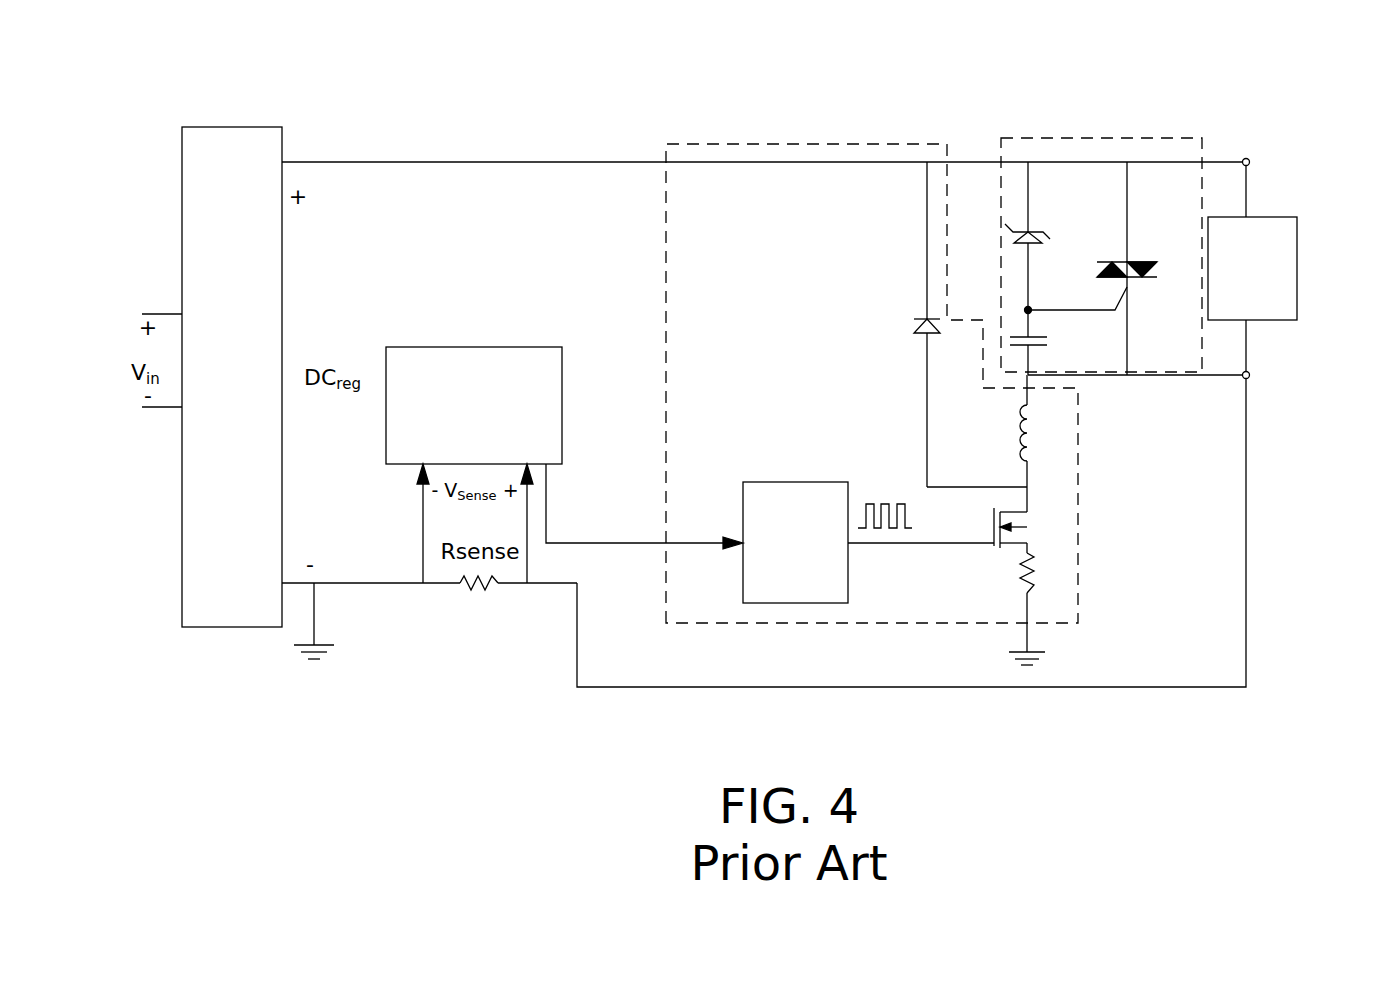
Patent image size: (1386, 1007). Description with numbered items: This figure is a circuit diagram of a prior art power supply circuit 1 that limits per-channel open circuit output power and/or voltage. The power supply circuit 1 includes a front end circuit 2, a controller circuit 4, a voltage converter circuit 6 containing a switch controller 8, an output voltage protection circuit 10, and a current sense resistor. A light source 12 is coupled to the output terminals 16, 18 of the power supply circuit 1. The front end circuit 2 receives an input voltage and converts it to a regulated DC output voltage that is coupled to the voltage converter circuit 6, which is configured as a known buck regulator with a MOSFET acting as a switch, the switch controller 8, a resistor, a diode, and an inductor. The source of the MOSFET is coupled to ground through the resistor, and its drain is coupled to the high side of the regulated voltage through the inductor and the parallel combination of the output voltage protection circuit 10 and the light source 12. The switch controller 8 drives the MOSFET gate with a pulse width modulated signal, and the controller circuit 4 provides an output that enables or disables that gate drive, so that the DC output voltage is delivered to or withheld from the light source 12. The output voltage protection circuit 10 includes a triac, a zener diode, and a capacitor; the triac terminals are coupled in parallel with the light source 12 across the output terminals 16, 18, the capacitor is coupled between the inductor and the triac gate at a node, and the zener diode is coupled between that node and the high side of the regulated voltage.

The power supply circuit 1 is at (461, 68).
The front end circuit 2 is at (232, 377).
The controller circuit 4 is at (474, 405).
The voltage converter circuit 6 is at (777, 144).
The switch controller 8 is at (795, 542).
The output voltage protection circuit 10 is at (1080, 138).
The light source 12 is at (1252, 268).
The output terminal 16 is at (1249, 160).
The output terminal 18 is at (1250, 375).